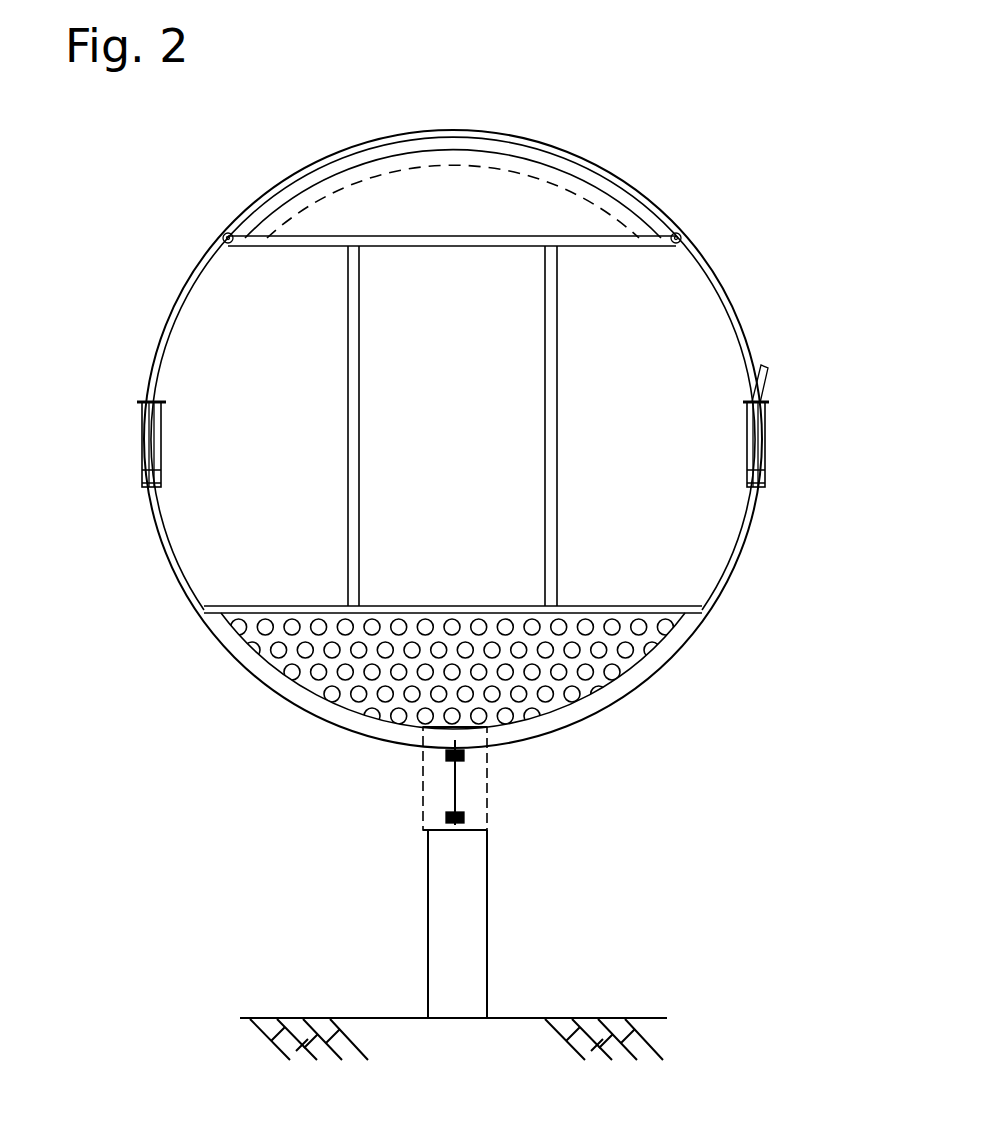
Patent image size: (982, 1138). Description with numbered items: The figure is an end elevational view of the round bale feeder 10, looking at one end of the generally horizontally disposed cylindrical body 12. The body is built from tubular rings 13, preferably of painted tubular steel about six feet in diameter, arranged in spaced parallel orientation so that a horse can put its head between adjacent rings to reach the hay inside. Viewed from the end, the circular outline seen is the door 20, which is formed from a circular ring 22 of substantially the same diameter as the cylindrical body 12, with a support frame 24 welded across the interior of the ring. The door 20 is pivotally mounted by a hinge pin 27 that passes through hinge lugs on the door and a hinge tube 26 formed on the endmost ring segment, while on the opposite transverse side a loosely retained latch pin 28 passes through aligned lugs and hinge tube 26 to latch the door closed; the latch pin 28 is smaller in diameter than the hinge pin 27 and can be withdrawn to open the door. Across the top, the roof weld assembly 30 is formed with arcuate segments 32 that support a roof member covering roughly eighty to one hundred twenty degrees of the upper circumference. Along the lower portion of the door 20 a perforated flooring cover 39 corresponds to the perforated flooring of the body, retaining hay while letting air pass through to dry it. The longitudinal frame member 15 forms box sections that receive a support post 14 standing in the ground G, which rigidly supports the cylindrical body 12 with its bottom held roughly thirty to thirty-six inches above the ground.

The round bale feeder 10 is at (657, 88).
The cylindrical body 12 is at (166, 237).
The tubular rings 13 is at (765, 522).
The support post 14 is at (456, 893).
The longitudinal central frame member 15 is at (458, 790).
The door 20 is at (755, 286).
The circular ring 22 is at (688, 622).
The support frame 24 is at (558, 376).
The hinge tube 26 is at (160, 457).
The hinge pin 27 is at (143, 400).
The latch pin 28 is at (768, 362).
The roof weld assembly 30 is at (679, 205).
The arcuate segments 32 is at (476, 129).
The perforated flooring cover 39 is at (572, 618).
The ground G is at (323, 1018).